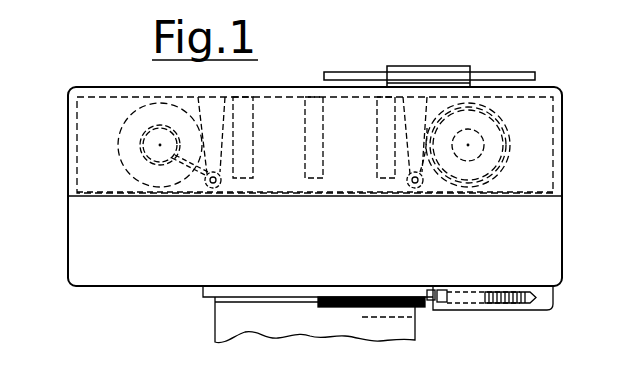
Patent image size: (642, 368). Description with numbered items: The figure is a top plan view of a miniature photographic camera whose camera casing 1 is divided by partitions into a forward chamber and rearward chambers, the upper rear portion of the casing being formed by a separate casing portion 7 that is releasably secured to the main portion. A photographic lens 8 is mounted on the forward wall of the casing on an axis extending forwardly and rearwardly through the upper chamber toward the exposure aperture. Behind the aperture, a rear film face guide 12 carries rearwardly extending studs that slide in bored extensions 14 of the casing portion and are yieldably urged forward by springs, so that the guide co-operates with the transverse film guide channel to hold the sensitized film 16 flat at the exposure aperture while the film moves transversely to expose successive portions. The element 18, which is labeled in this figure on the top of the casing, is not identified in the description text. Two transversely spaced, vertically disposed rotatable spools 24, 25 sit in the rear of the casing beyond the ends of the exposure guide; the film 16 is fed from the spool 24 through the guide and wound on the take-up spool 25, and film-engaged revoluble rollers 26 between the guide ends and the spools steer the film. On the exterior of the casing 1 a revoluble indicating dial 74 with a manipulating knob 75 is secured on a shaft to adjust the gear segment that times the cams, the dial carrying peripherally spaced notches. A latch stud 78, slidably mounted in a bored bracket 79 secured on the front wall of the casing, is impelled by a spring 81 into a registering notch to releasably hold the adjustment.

The camera casing 1 is at (76, 217).
The separate casing portion 7 is at (76, 110).
The photographic lens 8 is at (226, 327).
The rear film face guide 12 is at (268, 178).
The bored extensions 14 is at (257, 139).
The sensitized film 16 is at (428, 198).
The top plate 18 is at (455, 76).
The spool 24 is at (505, 162).
The spool 25 is at (127, 173).
The revoluble rollers 26 is at (220, 200).
The indicating dial 74 is at (428, 303).
The manipulating knob 75 is at (362, 317).
The latch stud 78 is at (441, 305).
The bored bracket 79 is at (519, 305).
The spring 81 is at (512, 312).